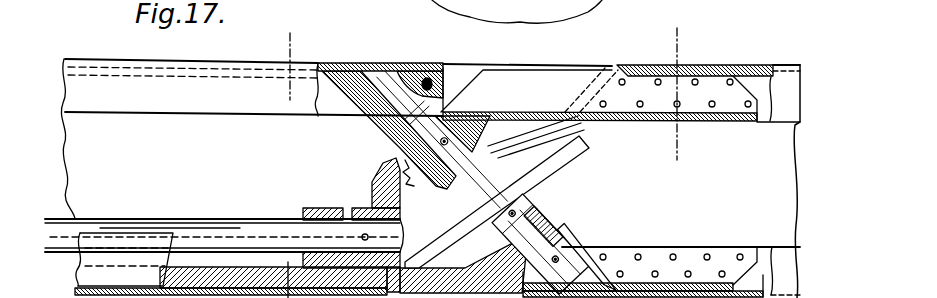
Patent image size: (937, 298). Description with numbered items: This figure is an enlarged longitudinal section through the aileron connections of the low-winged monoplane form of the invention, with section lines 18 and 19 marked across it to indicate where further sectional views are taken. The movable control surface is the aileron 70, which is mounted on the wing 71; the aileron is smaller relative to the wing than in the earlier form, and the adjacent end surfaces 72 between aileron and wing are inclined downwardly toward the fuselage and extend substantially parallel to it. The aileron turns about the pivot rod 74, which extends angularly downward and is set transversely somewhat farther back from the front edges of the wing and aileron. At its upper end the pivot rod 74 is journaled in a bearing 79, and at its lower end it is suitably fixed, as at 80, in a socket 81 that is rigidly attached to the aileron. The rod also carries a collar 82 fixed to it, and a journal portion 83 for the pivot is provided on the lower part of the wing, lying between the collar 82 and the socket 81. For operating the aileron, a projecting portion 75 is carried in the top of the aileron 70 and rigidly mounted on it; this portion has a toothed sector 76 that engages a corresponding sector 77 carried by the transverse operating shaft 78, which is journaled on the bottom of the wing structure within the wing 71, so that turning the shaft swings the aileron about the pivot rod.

The section line 18 is at (284, 47).
The section line 19 is at (671, 32).
The aileron 70 is at (725, 68).
The wing 71 is at (162, 63).
The adjacent end surfaces 72 is at (563, 136).
The pivot rod 74 is at (500, 167).
The projecting portion 75 is at (458, 112).
The toothed sector 76 is at (402, 158).
The sector 77 is at (376, 190).
The transverse operating shaft 78 is at (246, 217).
The bearing 79 is at (381, 80).
The fixed lower end 80 is at (566, 236).
The socket 81 is at (602, 248).
The collar 82 is at (531, 203).
The journal portion 83 is at (572, 212).